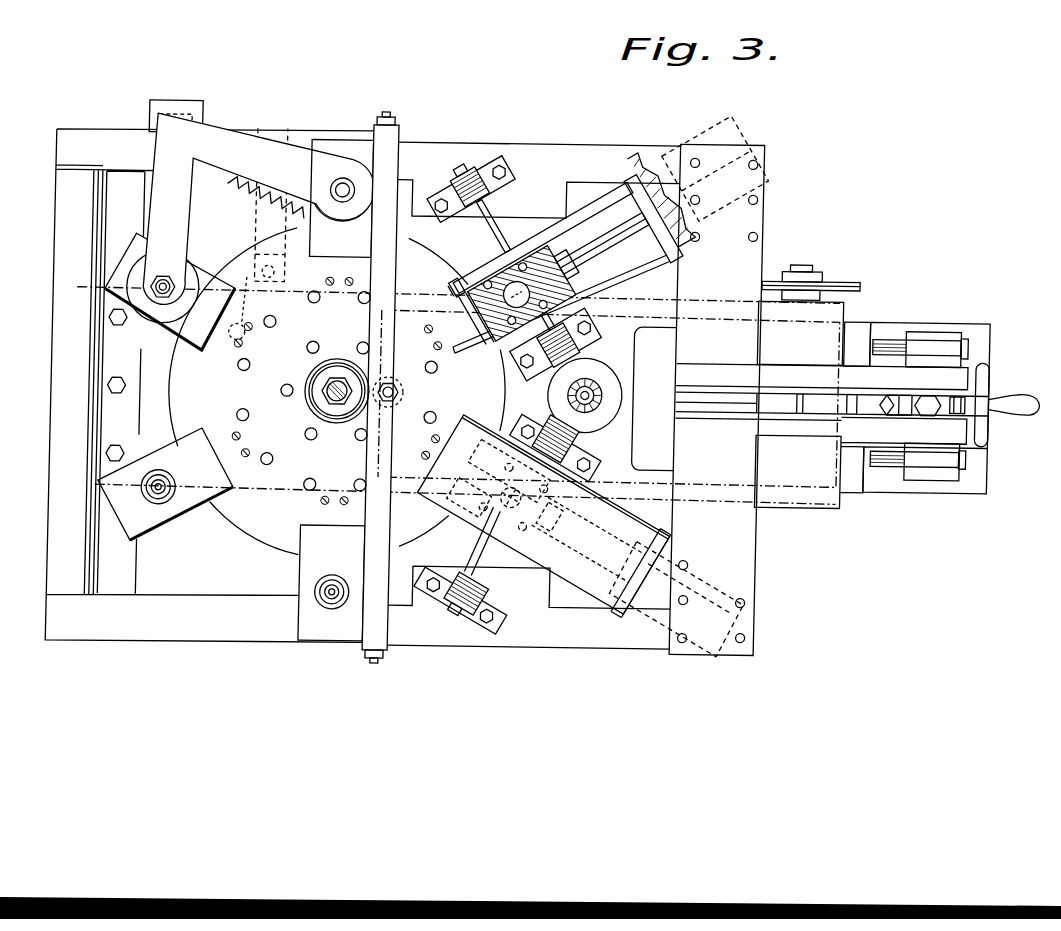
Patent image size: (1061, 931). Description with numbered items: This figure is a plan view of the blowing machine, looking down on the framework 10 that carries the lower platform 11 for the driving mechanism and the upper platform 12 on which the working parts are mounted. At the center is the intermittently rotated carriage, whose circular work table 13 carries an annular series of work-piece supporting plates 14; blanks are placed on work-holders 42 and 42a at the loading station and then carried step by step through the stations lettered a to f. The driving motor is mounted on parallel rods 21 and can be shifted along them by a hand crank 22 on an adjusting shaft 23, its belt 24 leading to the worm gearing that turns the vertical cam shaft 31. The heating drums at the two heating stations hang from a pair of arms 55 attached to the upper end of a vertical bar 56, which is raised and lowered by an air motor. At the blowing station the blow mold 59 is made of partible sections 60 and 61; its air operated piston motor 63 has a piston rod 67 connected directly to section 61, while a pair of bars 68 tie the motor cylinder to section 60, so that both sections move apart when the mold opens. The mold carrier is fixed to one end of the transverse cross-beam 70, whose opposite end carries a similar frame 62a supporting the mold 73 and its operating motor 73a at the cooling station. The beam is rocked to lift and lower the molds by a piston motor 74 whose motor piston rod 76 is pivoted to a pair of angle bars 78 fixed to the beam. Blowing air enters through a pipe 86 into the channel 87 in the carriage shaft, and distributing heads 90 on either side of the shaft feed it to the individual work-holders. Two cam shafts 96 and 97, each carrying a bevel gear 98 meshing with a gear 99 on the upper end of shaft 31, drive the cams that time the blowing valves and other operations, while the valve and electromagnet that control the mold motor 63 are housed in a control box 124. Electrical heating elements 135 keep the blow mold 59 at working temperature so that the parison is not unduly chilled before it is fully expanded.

The framework 10 is at (58, 370).
The lower platform 11 is at (986, 444).
The upper platform 12 is at (836, 303).
The circular work table 13 is at (245, 525).
The work-piece supporting plates 14 is at (322, 146).
The parallel rods 21 is at (894, 331).
The hand crank 22 is at (988, 372).
The adjusting shaft 23 is at (965, 397).
The belt 24 is at (768, 278).
The vertical cam shaft 31 is at (590, 397).
The work-holder 42 is at (166, 508).
The hidden roller 42a is at (244, 279).
The pair of arms 55 is at (229, 135).
The vertical bar 56 is at (189, 121).
The blow mold 59 is at (451, 269).
The mold section 60 is at (498, 335).
The mold section 61 is at (545, 246).
The frame 62a is at (596, 587).
The air operated piston motor 63 is at (652, 181).
The piston rod 67 is at (609, 239).
The pair of bars 68 is at (574, 219).
The cross-beam 70 is at (749, 545).
The mold 73 is at (492, 468).
The operating motor 73a is at (744, 578).
The piston motor 74 is at (820, 399).
The motor piston rod 76 is at (896, 398).
The pair of angle bars 78 is at (768, 415).
The pipe 86 is at (326, 402).
The channel 87 is at (338, 411).
The distributing heads 90 is at (608, 420).
The cam shaft 96 is at (491, 213).
The cam shaft 97 is at (482, 554).
The bevel gear 98 is at (582, 369).
The gear 99 is at (615, 375).
The control box 124 is at (678, 342).
The electrical heating elements 135 is at (481, 327).